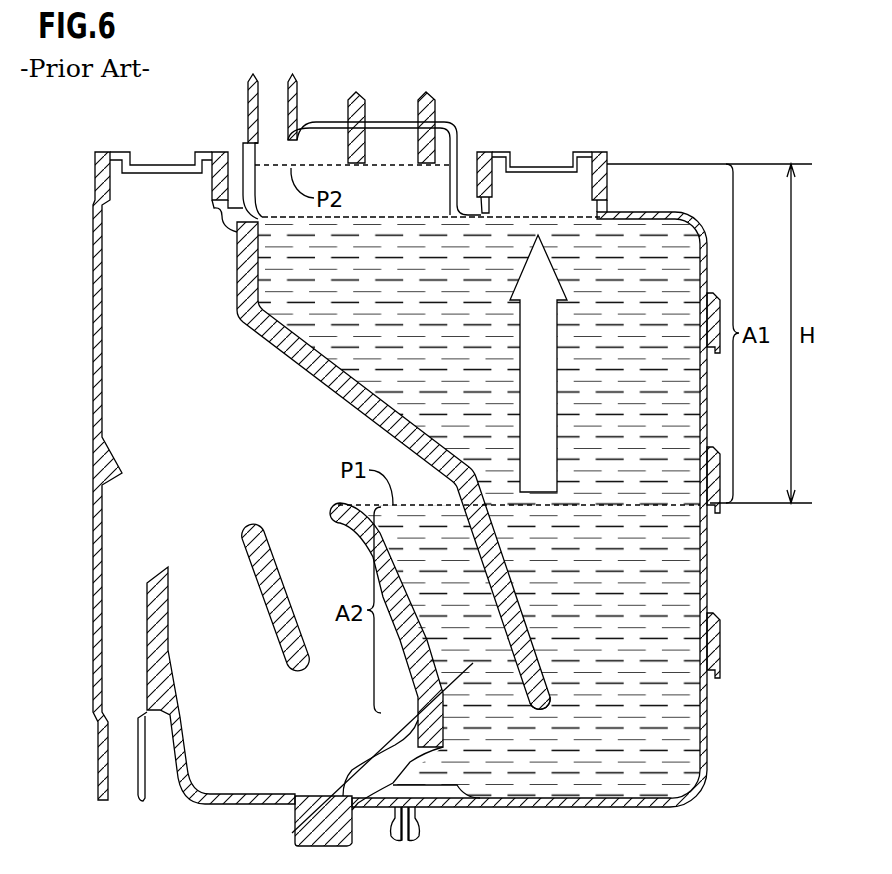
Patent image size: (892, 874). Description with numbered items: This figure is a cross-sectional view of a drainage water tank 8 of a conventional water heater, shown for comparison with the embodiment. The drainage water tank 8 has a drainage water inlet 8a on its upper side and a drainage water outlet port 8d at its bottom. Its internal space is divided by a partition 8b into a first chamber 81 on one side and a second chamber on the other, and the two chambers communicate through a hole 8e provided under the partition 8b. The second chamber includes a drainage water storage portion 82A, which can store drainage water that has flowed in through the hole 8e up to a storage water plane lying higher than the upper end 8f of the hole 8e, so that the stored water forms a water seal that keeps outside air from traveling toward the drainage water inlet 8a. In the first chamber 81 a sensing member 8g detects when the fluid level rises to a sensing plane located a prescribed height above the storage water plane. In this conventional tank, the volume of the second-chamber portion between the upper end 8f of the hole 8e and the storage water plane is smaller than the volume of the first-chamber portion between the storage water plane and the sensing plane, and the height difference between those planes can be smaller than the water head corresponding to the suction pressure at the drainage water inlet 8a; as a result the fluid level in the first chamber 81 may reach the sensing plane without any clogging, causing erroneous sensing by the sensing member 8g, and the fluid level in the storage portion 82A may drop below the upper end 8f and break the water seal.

The drainage water tank 8 is at (598, 115).
The drainage water inlet 8a is at (273, 143).
The sensing member 8g is at (425, 92).
The partition 8b is at (517, 597).
The upper end of hole 8f is at (548, 714).
The hole 8e is at (540, 753).
The first chamber 81 is at (587, 542).
The drainage water outlet port 8d is at (405, 832).
The drainage water storage portion 82A is at (400, 707).